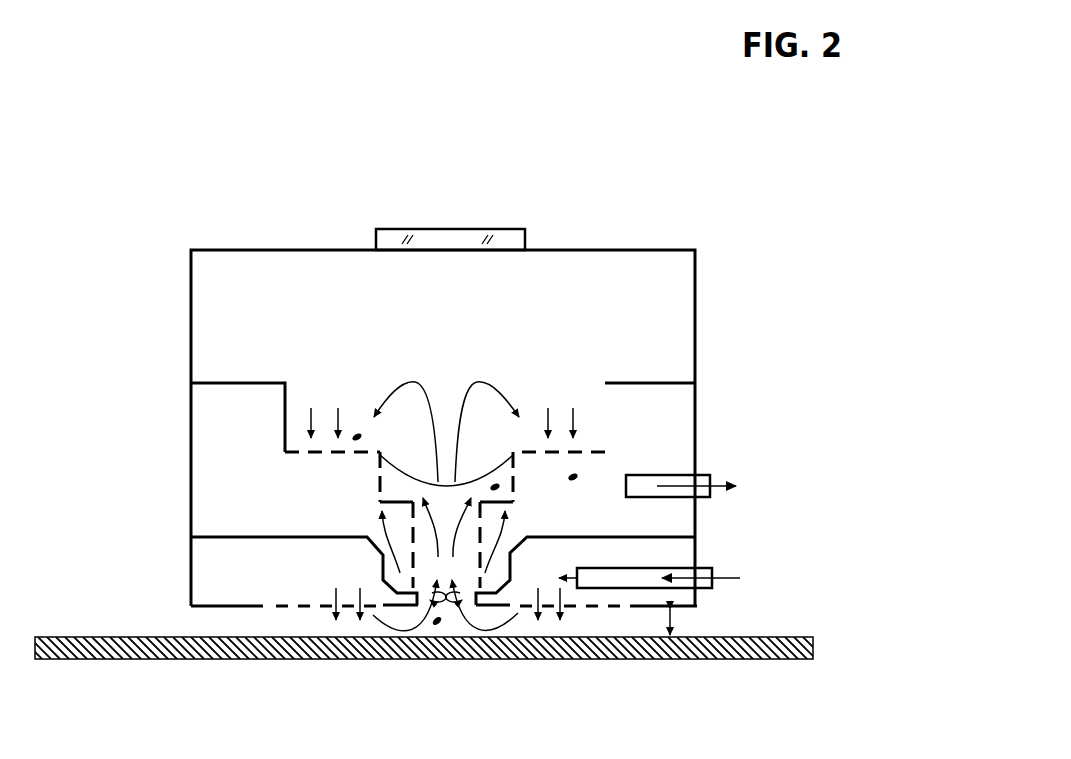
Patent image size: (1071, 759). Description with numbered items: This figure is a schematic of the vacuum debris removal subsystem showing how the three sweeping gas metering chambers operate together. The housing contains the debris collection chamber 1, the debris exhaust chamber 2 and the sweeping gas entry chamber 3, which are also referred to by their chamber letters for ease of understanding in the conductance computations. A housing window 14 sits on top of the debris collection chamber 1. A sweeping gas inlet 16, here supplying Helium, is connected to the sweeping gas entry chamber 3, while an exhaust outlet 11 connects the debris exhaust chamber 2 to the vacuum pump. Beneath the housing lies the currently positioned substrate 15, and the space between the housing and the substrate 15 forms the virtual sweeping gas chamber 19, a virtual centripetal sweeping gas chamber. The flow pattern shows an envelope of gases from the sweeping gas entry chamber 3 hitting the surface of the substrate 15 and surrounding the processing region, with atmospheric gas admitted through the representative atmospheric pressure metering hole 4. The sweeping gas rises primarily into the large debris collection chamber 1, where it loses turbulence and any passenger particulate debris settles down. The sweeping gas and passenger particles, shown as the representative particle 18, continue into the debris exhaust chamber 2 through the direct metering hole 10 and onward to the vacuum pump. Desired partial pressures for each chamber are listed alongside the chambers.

The debris collection chamber 1 is at (237, 348).
The debris exhaust chamber 2 is at (235, 472).
The sweeping gas entry chamber 3 is at (215, 565).
The representative atmospheric pressure metering hole 4 is at (278, 608).
The representative direct metering hole 10 is at (557, 448).
The exhaust outlet 11 is at (703, 471).
The housing window 14 is at (515, 229).
The currently positioned substrate 15 is at (358, 639).
The sweeping gas inlet 16 is at (703, 567).
The representative particle 18 is at (504, 484).
The virtual sweeping gas chamber vR4 19 is at (676, 618).